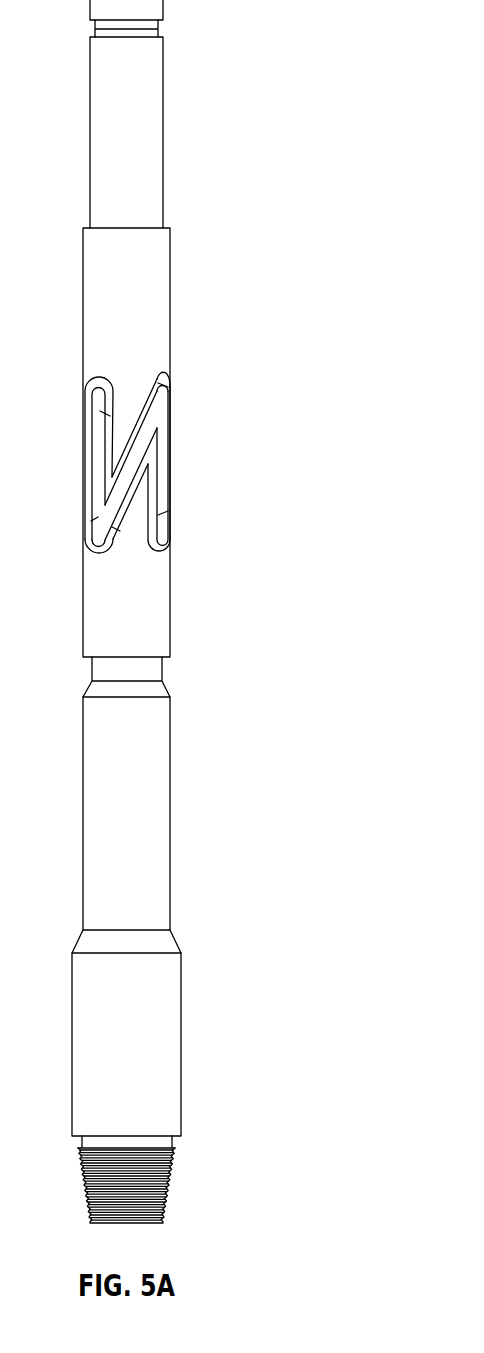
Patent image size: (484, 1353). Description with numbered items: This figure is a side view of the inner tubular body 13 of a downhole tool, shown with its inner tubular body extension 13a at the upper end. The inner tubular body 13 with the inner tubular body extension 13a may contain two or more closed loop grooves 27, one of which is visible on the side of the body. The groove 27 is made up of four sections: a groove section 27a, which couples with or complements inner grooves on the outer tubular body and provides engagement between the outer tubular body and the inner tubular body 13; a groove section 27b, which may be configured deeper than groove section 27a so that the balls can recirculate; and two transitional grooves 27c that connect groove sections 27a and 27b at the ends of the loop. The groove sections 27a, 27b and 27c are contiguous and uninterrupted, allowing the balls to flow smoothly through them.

The inner tubular body 13 is at (182, 1030).
The inner tubular body extension 13a is at (135, 100).
The closed loop groove 27 is at (168, 457).
The groove section 27a is at (132, 448).
The groove section 27b is at (148, 470).
The transitional groove 27c is at (168, 378).